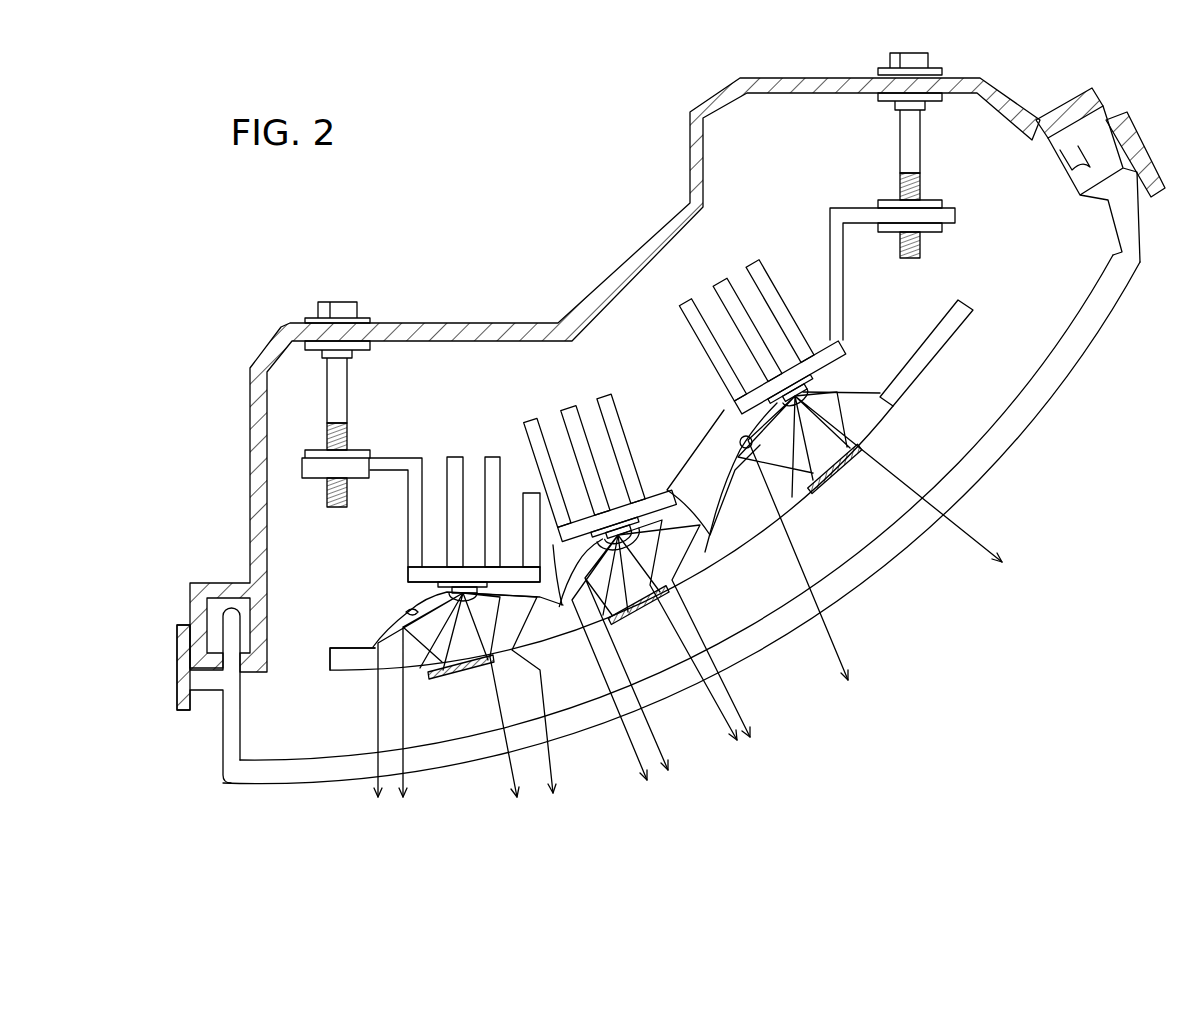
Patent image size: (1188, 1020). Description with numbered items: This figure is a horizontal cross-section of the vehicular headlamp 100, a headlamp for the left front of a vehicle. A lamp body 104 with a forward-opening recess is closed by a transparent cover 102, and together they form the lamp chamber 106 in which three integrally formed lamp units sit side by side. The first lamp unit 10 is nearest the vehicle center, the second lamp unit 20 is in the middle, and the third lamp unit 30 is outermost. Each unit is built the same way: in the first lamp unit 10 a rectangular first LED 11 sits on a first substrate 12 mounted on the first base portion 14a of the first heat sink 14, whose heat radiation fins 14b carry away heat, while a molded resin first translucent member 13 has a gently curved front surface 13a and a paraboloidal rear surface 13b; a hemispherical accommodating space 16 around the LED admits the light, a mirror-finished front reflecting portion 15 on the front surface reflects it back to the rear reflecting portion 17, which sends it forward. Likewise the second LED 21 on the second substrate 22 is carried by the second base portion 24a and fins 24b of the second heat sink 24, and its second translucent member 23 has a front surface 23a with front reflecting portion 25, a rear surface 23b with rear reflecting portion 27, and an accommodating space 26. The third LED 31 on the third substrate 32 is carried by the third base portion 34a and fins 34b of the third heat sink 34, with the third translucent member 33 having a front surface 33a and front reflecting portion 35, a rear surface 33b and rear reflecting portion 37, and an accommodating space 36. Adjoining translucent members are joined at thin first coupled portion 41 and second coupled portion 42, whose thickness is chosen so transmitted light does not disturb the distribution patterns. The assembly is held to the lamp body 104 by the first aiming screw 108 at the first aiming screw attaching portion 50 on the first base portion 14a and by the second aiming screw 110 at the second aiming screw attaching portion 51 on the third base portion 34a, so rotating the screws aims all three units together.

The vehicular headlamp 100 is at (1060, 579).
The cover 102 is at (1047, 400).
The lamp body 104 is at (250, 422).
The lamp chamber 106 is at (1024, 254).
The first aiming screw 108 is at (352, 437).
The second aiming screw 110 is at (903, 188).
The first lamp unit 10 is at (378, 691).
The first LED 11 is at (445, 583).
The first substrate 12 is at (440, 588).
The first translucent member 13 is at (435, 656).
The front surface of the first translucent member 13a is at (423, 673).
The rear surface of the first translucent member 13b is at (410, 612).
The first heat sink 14 is at (437, 496).
The first base portion 14a is at (430, 575).
The heat radiation fins 14b is at (492, 458).
The front reflecting portion 15 is at (475, 667).
The accommodating space 16 is at (455, 599).
The rear reflecting portion 17 is at (388, 630).
The second lamp unit 20 is at (631, 559).
The second LED 21 is at (619, 531).
The second substrate 22 is at (615, 527).
The second translucent member 23 is at (581, 573).
The front surface of the second translucent member 23a is at (610, 620).
The rear surface of the second translucent member 23b is at (665, 532).
The second heat sink 24 is at (600, 464).
The second base portion 24a is at (617, 515).
The heat radiation fins 24b is at (621, 448).
The front reflecting portion 25 is at (638, 604).
The accommodating space 26 is at (619, 539).
The rear reflecting portion 27 is at (620, 541).
The third lamp unit 30 is at (830, 443).
The third LED 31 is at (794, 393).
The third substrate 32 is at (790, 388).
The third translucent member 33 is at (792, 472).
The front surface of the third translucent member 33a is at (841, 392).
The rear surface of the third translucent member 33b is at (741, 477).
The third heat sink 34 is at (762, 330).
The third base portion 34a is at (789, 377).
The heat radiation fins 34b is at (780, 311).
The front reflecting portion 35 is at (834, 469).
The accommodating space 36 is at (797, 399).
The rear reflecting portion 37 is at (746, 442).
The first coupled portion 41 is at (558, 646).
The second coupled portion 42 is at (723, 570).
The first aiming screw attaching portion 50 is at (400, 470).
The second aiming screw attaching portion 51 is at (853, 225).